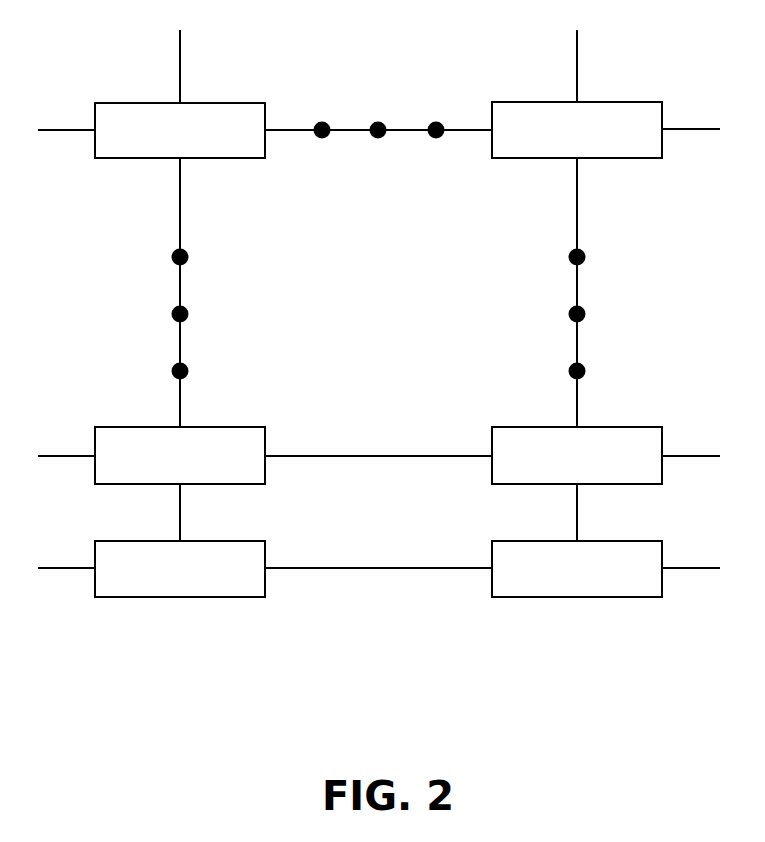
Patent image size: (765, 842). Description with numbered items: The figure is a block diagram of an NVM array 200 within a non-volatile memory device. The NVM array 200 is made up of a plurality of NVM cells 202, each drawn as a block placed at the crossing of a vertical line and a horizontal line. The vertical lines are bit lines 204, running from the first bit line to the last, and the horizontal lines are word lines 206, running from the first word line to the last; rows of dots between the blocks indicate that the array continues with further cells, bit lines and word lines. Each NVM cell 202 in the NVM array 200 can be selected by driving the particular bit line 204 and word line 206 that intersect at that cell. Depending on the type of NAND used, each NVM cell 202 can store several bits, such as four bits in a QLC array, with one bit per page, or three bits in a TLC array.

The NVM array 200 is at (408, 752).
The NVM cell 202 is at (180, 130).
The bit line 204 is at (227, 228).
The word line 206 is at (58, 135).